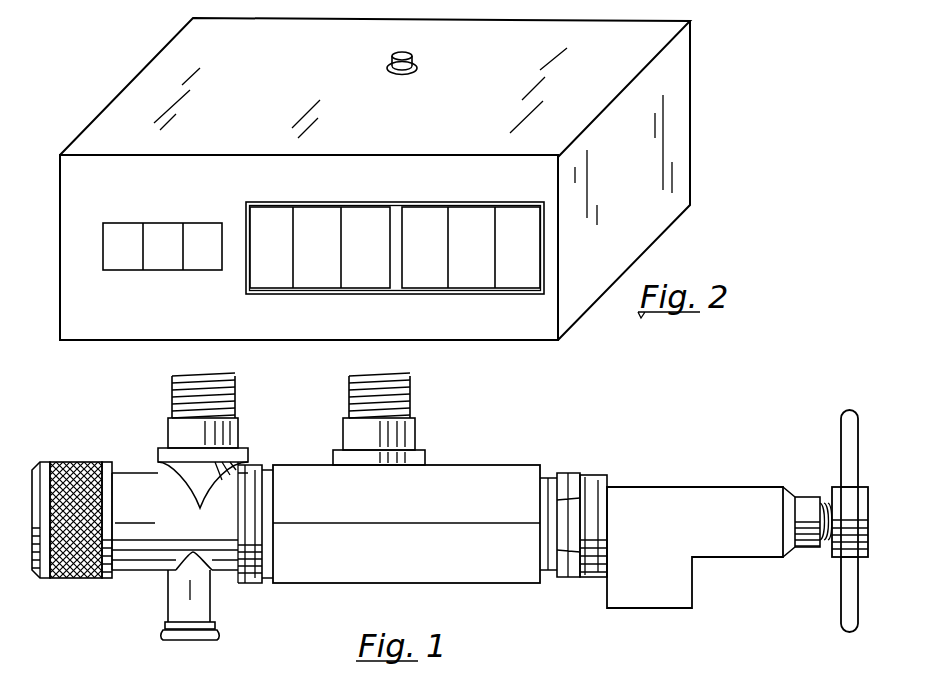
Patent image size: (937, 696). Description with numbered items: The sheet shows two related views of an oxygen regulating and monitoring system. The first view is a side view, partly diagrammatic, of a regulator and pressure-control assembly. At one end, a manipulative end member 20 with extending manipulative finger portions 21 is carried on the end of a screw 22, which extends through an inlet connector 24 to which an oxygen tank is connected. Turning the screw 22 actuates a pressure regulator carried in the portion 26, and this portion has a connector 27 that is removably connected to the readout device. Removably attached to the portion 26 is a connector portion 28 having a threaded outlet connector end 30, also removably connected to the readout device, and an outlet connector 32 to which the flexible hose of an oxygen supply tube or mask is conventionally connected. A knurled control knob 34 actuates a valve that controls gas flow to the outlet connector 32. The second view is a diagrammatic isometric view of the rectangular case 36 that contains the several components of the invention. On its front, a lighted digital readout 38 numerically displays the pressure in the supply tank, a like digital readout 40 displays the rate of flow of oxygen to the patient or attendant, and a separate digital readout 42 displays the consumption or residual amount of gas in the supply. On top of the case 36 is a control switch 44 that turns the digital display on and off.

In FIG. 1, the manipulative end member 20 is at (860, 517).
In FIG. 1, the manipulative finger portions 21 is at (853, 449).
In FIG. 1, the screw 22 is at (830, 505).
In FIG. 1, the inlet connector 24 is at (726, 495).
In FIG. 1, the pressure regulator portion 26 is at (492, 570).
In FIG. 1, the connector 27 is at (345, 404).
In FIG. 1, the connector portion 28 is at (138, 470).
In FIG. 1, the threaded outlet connector end 30 is at (172, 398).
In FIG. 1, the outlet connector 32 is at (170, 594).
In FIG. 1, the knurled control knob 34 is at (62, 458).
In FIG. 2, the rectangular case 36 is at (152, 72).
In FIG. 2, the digital readout 38 is at (529, 308).
In FIG. 2, the digital readout 40 is at (395, 252).
In FIG. 2, the digital readout 42 is at (101, 250).
In FIG. 2, the control switch 44 is at (414, 60).